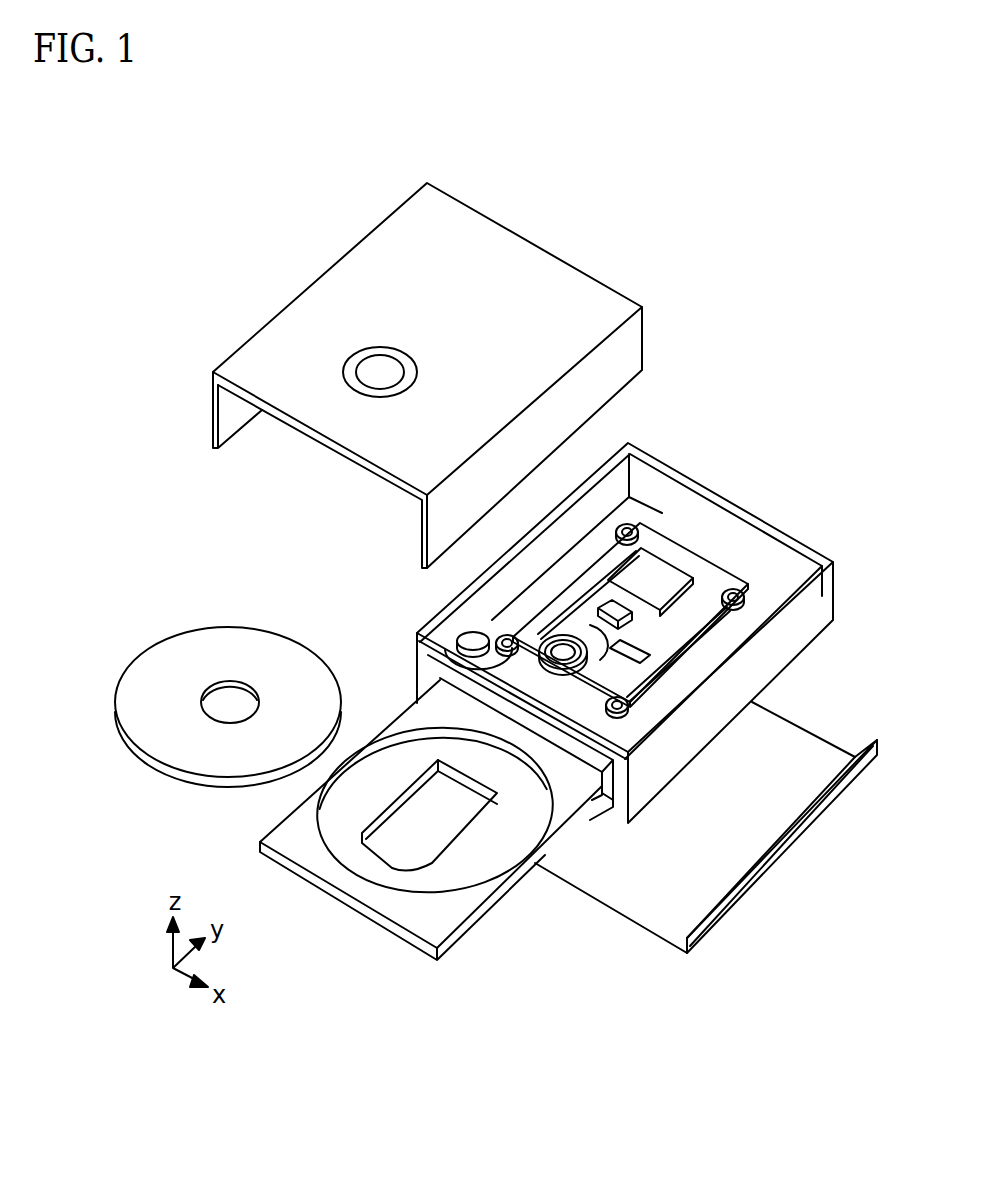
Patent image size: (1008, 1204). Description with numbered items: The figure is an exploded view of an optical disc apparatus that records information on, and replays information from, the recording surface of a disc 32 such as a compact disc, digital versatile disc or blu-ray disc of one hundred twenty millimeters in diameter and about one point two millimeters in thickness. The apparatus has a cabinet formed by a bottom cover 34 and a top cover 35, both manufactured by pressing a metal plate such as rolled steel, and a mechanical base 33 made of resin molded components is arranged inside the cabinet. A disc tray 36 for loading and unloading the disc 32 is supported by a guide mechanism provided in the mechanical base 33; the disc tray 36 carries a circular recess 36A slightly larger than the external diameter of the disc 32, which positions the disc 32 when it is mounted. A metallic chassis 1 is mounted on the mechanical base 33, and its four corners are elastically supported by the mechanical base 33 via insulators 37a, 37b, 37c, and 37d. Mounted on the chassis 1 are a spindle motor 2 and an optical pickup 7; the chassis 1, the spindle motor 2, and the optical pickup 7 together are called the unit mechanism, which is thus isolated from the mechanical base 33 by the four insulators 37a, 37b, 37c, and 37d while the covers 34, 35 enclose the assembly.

The chassis 1 is at (712, 578).
The spindle motor 2 is at (567, 652).
The optical pickup 7 is at (638, 645).
The disc 32 is at (208, 658).
The mechanical base 33 is at (707, 555).
The bottom cover 34 is at (768, 785).
The top cover 35 is at (497, 260).
The disc tray 36 is at (431, 852).
The circular recess 36A is at (422, 885).
The insulator 37a is at (617, 713).
The insulator 37b is at (500, 633).
The insulator 37c is at (743, 598).
The insulator 37d is at (628, 525).